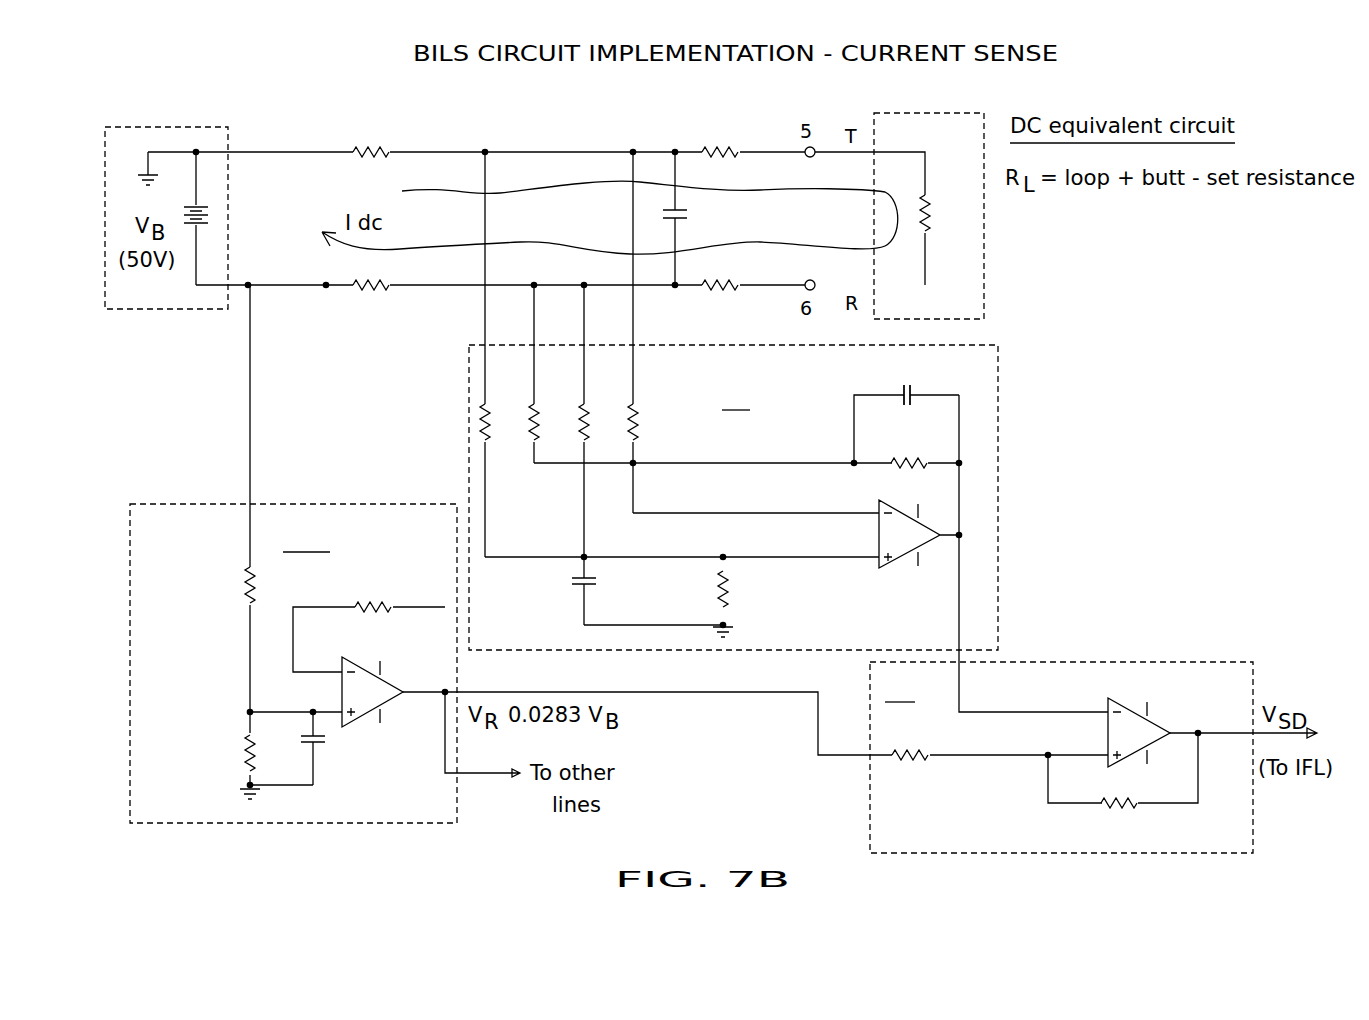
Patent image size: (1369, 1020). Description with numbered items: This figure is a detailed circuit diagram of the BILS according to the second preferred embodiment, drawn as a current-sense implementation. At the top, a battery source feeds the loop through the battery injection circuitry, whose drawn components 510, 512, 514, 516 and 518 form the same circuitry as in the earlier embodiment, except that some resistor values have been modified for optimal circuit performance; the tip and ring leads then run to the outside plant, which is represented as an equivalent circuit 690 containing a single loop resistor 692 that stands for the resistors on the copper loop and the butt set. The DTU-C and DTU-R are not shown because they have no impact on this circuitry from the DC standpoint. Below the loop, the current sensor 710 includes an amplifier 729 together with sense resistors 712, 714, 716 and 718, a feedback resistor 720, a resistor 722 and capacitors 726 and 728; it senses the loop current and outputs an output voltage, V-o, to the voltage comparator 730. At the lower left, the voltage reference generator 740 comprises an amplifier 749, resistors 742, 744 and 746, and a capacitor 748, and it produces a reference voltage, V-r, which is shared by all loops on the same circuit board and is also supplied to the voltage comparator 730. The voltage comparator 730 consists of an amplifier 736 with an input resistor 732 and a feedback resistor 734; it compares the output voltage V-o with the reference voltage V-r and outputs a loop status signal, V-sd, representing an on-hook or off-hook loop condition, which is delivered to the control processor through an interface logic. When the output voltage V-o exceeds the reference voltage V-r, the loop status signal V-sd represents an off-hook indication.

The bias resistor RB1 510 is at (390, 152).
The bias resistor RB3 512 is at (740, 150).
The bias resistor RB2 514 is at (390, 287).
The bias resistor RB4 516 is at (740, 287).
The capacitor C1 518 is at (668, 222).
The equivalent circuit 690 is at (984, 283).
The resistor R_L 692 is at (930, 226).
The current sensor CS 710 is at (998, 585).
The resistor R_1 712 is at (490, 438).
The resistor R_2 714 is at (638, 438).
The resistor R_3 716 is at (589, 438).
The resistor R_4 718 is at (539, 438).
The resistor R_5 720 is at (892, 466).
The resistor R_6 722 is at (728, 598).
The capacitor C_2 726 is at (907, 402).
The capacitor C_3 728 is at (579, 596).
The amplifier A_1 729 is at (879, 535).
The voltage comparator VC 730 is at (1200, 662).
The resistor R_7 732 is at (930, 760).
The resistor R_8 734 is at (1138, 808).
The amplifier A_2 736 is at (1108, 733).
The voltage reference generator VRG 740 is at (410, 823).
The resistor R_9 742 is at (250, 575).
The resistor R_10 744 is at (250, 740).
The resistor R_11 746 is at (355, 607).
The capacitor C_4 748 is at (322, 742).
The amplifier A_3 749 is at (342, 692).